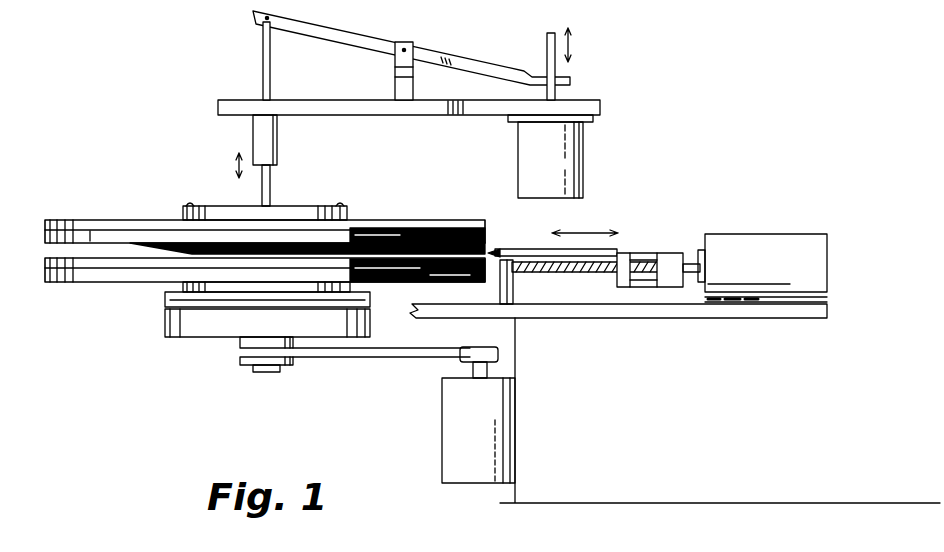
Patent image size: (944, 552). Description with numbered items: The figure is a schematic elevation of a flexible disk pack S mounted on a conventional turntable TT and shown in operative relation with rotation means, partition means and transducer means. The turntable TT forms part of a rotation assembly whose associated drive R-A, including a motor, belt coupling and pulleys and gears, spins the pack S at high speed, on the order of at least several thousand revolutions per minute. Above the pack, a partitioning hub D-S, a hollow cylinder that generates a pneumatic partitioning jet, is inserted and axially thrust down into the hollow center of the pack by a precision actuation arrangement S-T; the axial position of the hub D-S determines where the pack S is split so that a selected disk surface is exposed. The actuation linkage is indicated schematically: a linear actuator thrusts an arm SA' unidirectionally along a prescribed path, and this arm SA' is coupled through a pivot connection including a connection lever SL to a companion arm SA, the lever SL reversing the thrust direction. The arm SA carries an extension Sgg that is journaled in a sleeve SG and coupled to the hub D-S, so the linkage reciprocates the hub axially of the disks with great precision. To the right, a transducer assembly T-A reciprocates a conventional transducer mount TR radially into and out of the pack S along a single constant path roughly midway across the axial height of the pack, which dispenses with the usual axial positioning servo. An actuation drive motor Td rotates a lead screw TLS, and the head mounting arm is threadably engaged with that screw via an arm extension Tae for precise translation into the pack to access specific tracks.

The connection lever SL is at (328, 26).
The companion arm SA is at (242, 61).
The arm SA' is at (532, 56).
The precision actuation arrangement S-T is at (620, 0).
The sleeve SG is at (277, 152).
The arm extension Sgg is at (272, 190).
The partitioning hub D-S is at (182, 206).
The flexible disk pack S is at (100, 215).
The turntable TT is at (167, 294).
The drive R-A is at (440, 370).
The transducer mount TR is at (506, 249).
The transducer assembly T-A is at (833, 225).
The lead screw TLS is at (586, 273).
The arm extension Tae is at (665, 288).
The actuation drive motor Td is at (760, 297).